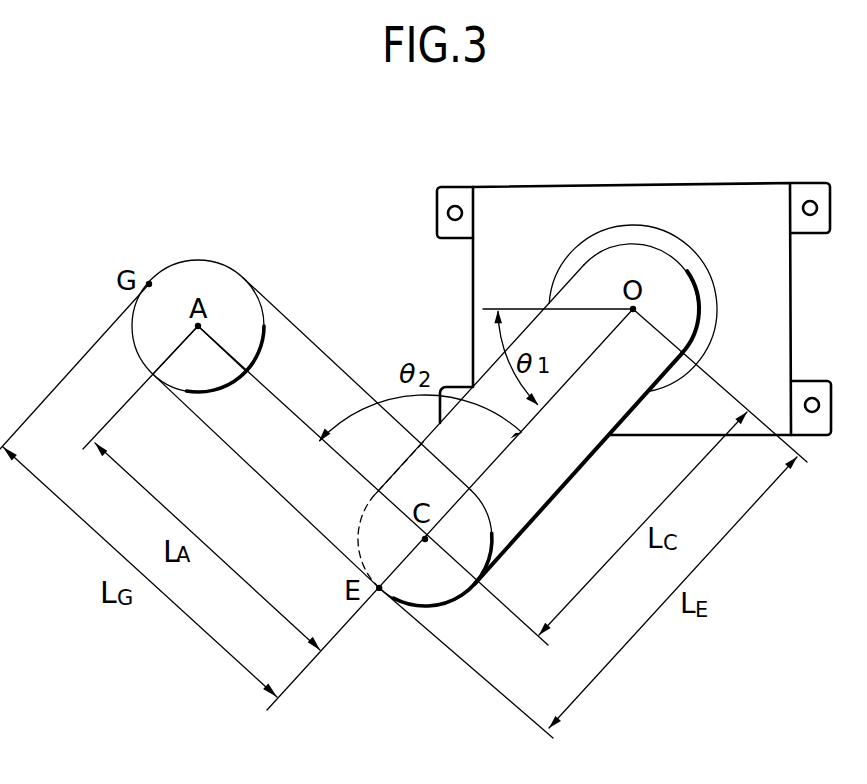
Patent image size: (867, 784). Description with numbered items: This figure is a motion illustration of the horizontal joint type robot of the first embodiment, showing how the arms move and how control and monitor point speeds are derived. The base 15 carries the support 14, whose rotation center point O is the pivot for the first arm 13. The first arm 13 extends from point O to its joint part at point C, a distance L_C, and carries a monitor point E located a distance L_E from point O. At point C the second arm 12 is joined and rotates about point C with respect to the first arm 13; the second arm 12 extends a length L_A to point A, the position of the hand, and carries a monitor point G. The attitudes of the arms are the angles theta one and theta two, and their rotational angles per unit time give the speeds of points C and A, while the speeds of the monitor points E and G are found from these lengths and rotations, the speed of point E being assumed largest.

The second arm 12 is at (287, 332).
The first arm 13 is at (588, 272).
The support 14 is at (638, 233).
The base 15 is at (703, 183).